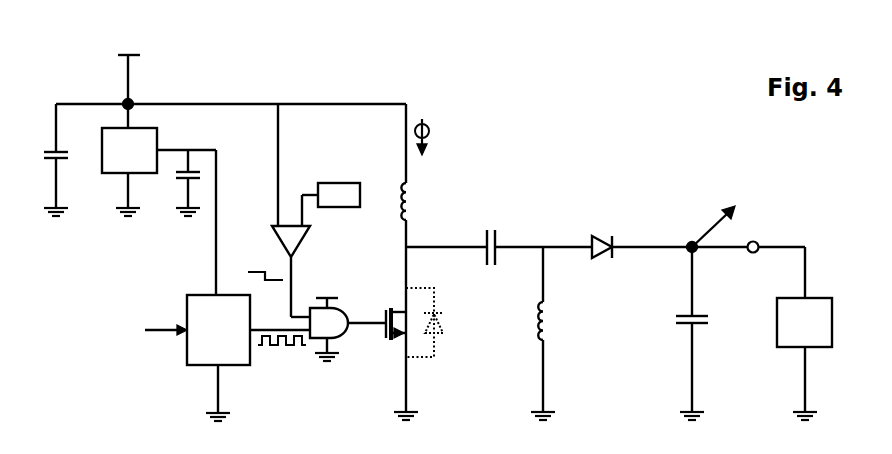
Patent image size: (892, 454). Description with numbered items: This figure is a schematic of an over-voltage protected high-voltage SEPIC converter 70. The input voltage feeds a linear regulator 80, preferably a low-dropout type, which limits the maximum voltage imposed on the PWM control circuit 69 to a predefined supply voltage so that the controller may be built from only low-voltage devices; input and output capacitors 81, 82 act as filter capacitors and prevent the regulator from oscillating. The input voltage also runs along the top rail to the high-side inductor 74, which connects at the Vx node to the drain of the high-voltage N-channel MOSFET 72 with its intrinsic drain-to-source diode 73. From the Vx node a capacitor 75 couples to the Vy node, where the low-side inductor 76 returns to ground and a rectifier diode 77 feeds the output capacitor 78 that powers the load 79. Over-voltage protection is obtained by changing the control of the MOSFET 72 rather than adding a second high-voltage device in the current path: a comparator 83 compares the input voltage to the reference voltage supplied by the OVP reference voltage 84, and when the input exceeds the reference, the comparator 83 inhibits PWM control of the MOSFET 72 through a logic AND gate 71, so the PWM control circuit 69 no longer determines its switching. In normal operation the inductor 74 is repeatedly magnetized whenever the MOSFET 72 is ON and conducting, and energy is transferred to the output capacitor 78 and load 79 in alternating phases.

The PWM control circuit 69 is at (243, 366).
The SEPIC converter 70 is at (62, 397).
The logic AND gate 71 is at (329, 323).
The high-voltage N-channel MOSFET 72 is at (386, 340).
The intrinsic drain-to-source diode 73 is at (440, 327).
The high-side inductor 74 is at (410, 197).
The capacitor 75 is at (495, 268).
The low-side inductor 76 is at (547, 306).
The rectifier diode 77 is at (614, 236).
The output capacitor 78 is at (677, 318).
The load 79 is at (833, 300).
The linear regulator 80 is at (101, 129).
The input capacitor 81 is at (49, 152).
The output capacitor 82 is at (186, 179).
The comparator 83 is at (303, 243).
The OVP reference voltage 84 is at (339, 179).